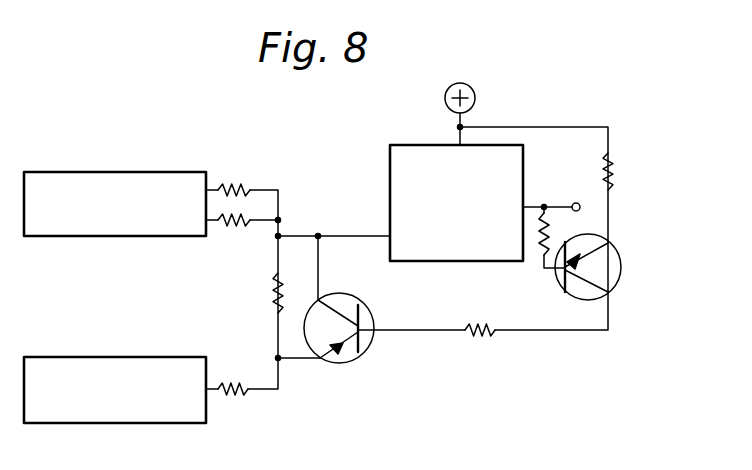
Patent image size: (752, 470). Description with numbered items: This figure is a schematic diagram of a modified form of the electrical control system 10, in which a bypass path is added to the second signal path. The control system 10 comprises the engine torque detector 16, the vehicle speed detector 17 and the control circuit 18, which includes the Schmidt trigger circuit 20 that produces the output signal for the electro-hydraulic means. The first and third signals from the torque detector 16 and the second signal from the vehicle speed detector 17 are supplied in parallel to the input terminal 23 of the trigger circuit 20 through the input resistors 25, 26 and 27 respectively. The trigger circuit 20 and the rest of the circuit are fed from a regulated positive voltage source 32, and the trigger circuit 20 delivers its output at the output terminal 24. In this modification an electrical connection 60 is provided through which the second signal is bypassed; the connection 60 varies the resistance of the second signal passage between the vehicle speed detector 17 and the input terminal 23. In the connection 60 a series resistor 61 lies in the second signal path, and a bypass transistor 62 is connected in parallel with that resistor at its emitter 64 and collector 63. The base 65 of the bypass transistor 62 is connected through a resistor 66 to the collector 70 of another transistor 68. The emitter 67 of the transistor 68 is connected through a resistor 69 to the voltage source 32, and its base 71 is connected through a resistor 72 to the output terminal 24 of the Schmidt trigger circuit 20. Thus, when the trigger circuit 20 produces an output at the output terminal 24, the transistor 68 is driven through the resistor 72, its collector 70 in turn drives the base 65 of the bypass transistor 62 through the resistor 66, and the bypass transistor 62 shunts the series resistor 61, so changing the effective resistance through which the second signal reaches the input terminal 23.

The control system 10 is at (512, 79).
The torque detector 16 is at (73, 172).
The vehicle speed detector 17 is at (80, 357).
The control circuit 18 is at (594, 123).
The Schmidt trigger circuit 20 is at (405, 145).
The input terminal 23 is at (281, 236).
The output terminal 24 is at (576, 203).
The input resistor 25 is at (221, 223).
The input resistor 26 is at (227, 385).
The input resistor 27 is at (246, 185).
The voltage source 32 is at (476, 102).
The electrical connection 60 is at (563, 279).
The series resistor 61 is at (274, 305).
The bypass transistor 62 is at (365, 340).
The collector 63 is at (338, 313).
The emitter 64 is at (339, 359).
The base 65 is at (363, 338).
The resistor 66 is at (493, 336).
The emitter 67 is at (563, 274).
The transistor 68 is at (557, 296).
The resistor 69 is at (613, 182).
The collector 70 is at (590, 298).
The base 71 is at (556, 278).
The resistor 72 is at (549, 240).